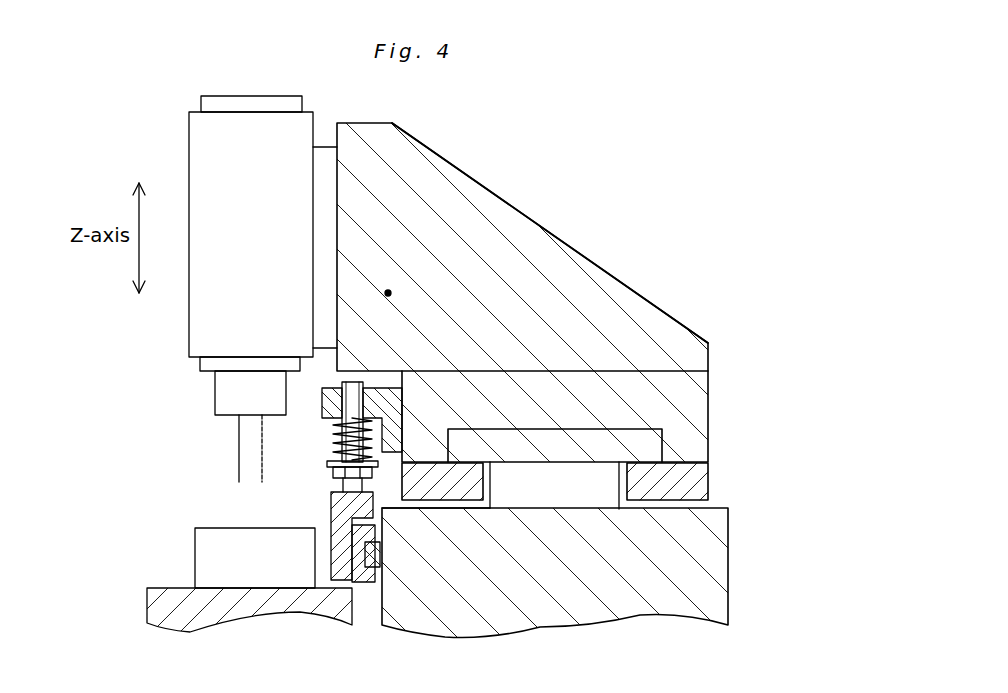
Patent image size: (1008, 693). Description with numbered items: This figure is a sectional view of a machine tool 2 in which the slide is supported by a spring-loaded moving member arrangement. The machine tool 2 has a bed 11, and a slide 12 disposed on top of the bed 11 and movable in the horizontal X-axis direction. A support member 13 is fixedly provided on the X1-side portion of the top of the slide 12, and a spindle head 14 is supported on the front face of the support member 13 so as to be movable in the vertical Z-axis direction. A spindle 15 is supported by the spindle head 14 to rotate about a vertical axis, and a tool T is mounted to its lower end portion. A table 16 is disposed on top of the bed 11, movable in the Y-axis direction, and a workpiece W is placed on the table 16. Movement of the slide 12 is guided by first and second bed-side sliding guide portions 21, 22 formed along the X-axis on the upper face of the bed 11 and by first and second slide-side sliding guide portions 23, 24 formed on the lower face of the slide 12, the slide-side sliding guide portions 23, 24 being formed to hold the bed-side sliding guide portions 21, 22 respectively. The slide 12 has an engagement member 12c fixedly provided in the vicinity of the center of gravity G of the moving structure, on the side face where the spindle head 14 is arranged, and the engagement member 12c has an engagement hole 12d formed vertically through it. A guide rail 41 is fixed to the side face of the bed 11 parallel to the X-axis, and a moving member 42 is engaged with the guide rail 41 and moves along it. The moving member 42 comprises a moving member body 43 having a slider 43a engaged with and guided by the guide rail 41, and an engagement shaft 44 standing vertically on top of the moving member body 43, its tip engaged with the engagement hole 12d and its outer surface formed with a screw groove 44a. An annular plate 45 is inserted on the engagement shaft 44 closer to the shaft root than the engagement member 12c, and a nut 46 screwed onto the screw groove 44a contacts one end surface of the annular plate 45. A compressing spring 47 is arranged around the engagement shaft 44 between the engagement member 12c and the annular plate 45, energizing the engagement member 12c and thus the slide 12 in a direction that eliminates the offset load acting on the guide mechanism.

The machine tool 2 is at (649, 145).
The bed 11 is at (717, 600).
The slide 12 is at (663, 372).
The engagement member 12c is at (327, 398).
The engagement hole 12d is at (347, 387).
The support member 13 is at (601, 275).
The spindle head 14 is at (196, 152).
The spindle 15 is at (222, 392).
The table 16 is at (150, 594).
The first bed-side sliding guide portion 21 is at (650, 442).
The second bed-side sliding guide portion 22 is at (458, 440).
The first slide-side sliding guide portion 23 is at (690, 450).
The second slide-side sliding guide portion 24 is at (422, 450).
The guide rail 41 is at (281, 584).
The moving member 42 is at (322, 541).
The moving member body 43 is at (340, 578).
The slider 43a is at (370, 586).
The engagement shaft 44 is at (345, 388).
The screw groove 44a is at (338, 483).
The annular plate 45 is at (330, 463).
The nut 46 is at (335, 472).
The compressing spring 47 is at (335, 441).
The center of gravity G is at (388, 293).
The tool T is at (243, 448).
The workpiece W is at (197, 562).